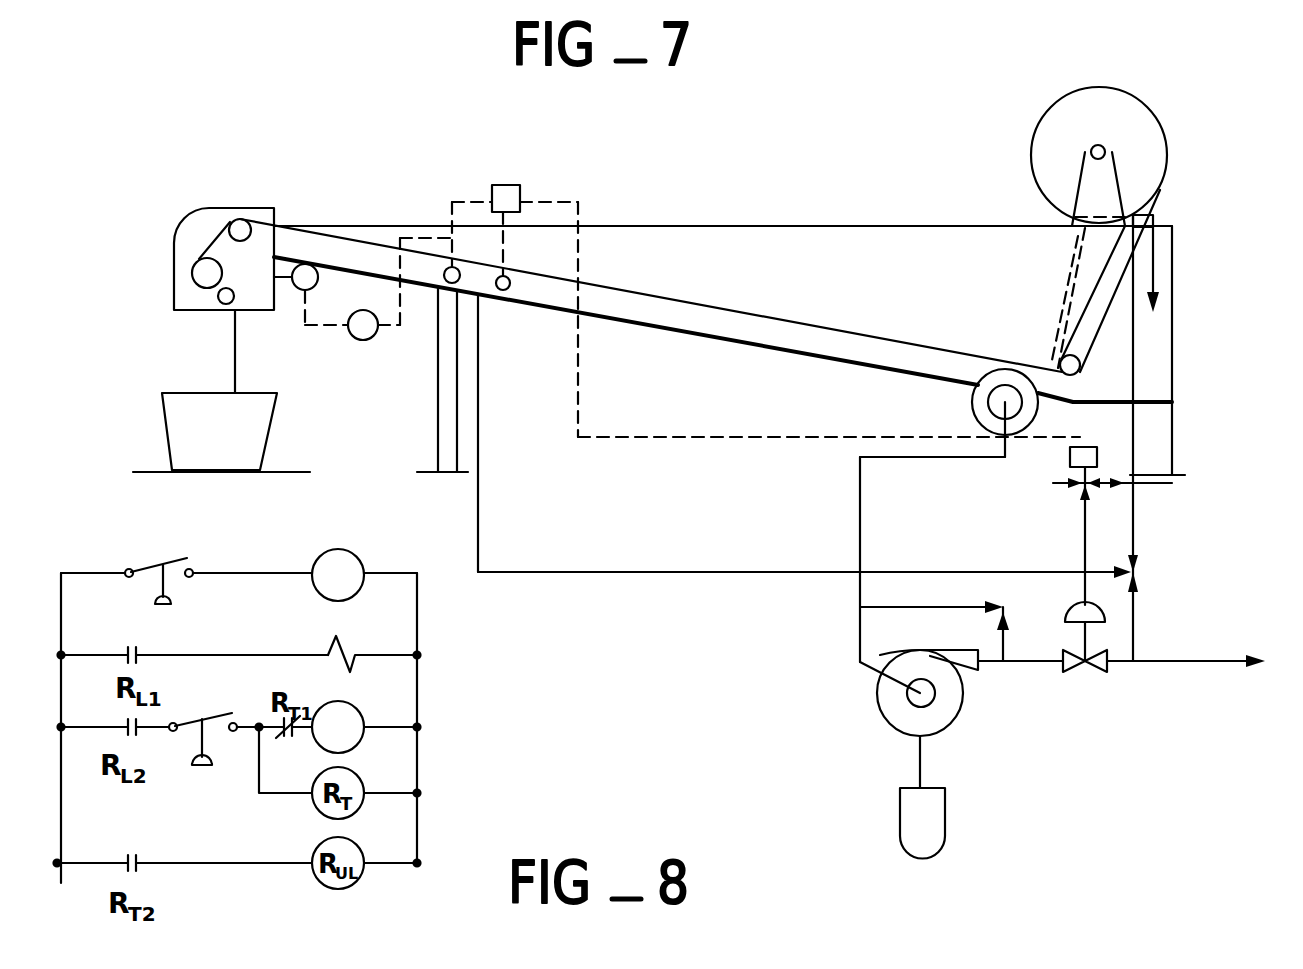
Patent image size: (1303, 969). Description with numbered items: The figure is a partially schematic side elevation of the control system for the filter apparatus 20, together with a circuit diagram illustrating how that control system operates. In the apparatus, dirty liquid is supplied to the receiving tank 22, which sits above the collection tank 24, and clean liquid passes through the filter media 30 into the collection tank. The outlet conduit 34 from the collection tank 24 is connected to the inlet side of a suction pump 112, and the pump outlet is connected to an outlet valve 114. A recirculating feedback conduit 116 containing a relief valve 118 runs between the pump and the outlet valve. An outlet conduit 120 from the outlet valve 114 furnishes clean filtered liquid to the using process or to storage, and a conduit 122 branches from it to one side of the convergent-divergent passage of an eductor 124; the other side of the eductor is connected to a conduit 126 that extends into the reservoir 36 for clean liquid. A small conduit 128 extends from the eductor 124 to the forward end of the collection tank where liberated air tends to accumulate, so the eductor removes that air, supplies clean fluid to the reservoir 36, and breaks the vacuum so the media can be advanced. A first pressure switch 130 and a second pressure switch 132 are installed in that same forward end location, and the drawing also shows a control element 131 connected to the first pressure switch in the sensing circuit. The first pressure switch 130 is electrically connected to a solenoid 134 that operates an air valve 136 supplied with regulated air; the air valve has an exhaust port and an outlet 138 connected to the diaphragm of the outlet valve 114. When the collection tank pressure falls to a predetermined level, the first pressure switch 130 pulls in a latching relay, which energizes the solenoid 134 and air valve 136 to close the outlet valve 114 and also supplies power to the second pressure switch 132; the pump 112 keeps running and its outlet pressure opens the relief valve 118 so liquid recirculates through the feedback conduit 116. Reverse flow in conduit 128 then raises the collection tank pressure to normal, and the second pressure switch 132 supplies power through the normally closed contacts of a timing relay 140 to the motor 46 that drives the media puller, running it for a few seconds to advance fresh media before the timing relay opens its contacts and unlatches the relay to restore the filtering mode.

In FIG. 7, the filter apparatus 20 is at (653, 196).
In FIG. 7, the receiving tank 22 is at (907, 240).
In FIG. 7, the collection tank 24 is at (837, 360).
In FIG. 7, the filter media 30 is at (1108, 305).
In FIG. 7, the outlet conduit 34 is at (917, 455).
In FIG. 7, the storage reservoir 36 is at (1155, 335).
In FIG. 7, the motor 46 is at (298, 290).
In FIG. 8, the motor 46 is at (350, 713).
In FIG. 7, the suction pump 112 is at (880, 720).
In FIG. 7, the outlet valve 114 is at (1078, 672).
In FIG. 7, the recirculating feedback conduit 116 is at (925, 603).
In FIG. 7, the relief valve 118 is at (1006, 612).
In FIG. 7, the outlet conduit 120 is at (1175, 668).
In FIG. 7, the conduit 122 is at (1133, 636).
In FIG. 7, the eductor 124 is at (1136, 580).
In FIG. 7, the conduit 126 is at (1133, 363).
In FIG. 7, the small conduit 128 is at (667, 570).
In FIG. 7, the first pressure switch 130 is at (508, 290).
In FIG. 8, the first pressure switch 130 is at (152, 565).
In FIG. 7, the relay 131 is at (498, 185).
In FIG. 8, the relay 131 is at (358, 560).
In FIG. 7, the second pressure switch 132 is at (452, 267).
In FIG. 8, the second pressure switch 132 is at (190, 722).
In FIG. 7, the solenoid 134 is at (1070, 450).
In FIG. 8, the solenoid 134 is at (330, 645).
In FIG. 7, the air valve 136 is at (1082, 492).
In FIG. 7, the outlet 138 is at (1083, 534).
In FIG. 7, the timing relay 140 is at (368, 340).